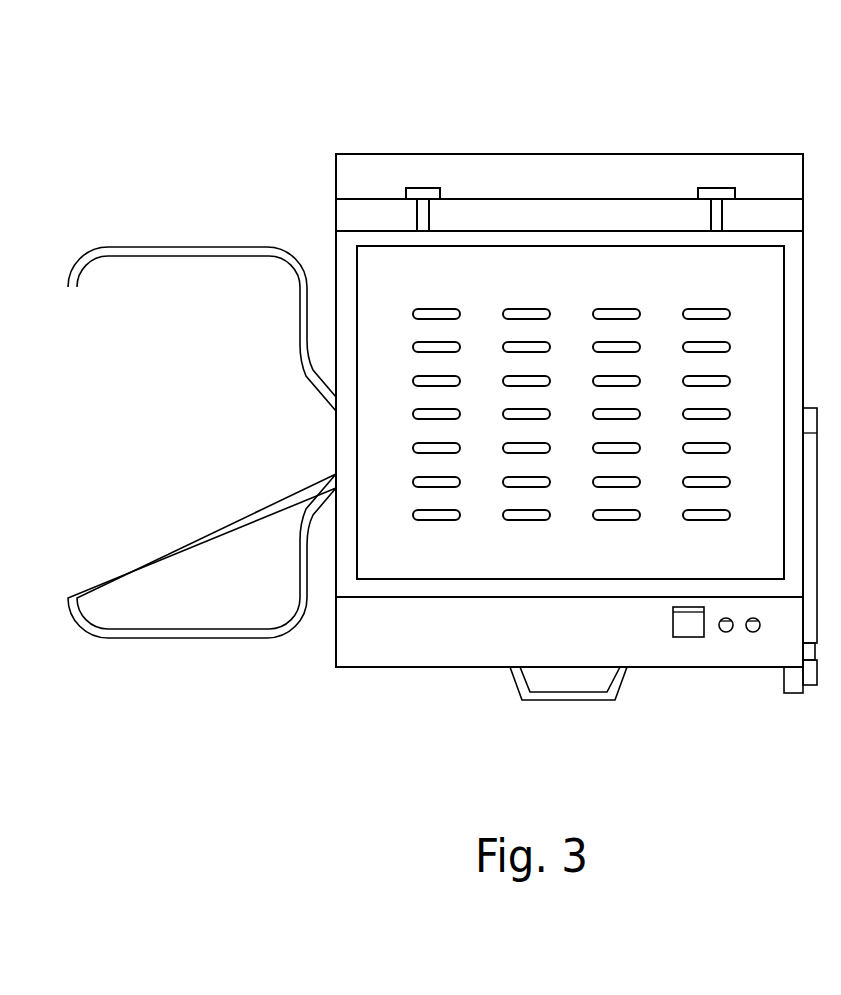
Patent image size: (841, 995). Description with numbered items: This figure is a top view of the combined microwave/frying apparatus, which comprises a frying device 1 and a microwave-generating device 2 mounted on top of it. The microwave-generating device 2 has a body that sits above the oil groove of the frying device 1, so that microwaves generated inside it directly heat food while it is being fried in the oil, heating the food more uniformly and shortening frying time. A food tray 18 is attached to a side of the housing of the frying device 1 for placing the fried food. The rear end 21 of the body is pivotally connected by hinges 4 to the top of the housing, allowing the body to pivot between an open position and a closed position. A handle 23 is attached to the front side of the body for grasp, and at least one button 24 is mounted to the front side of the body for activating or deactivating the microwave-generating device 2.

The frying device 1 is at (636, 130).
The microwave-generating device 2 is at (330, 268).
The hinges 4 is at (430, 210).
The food tray 18 is at (205, 252).
The rear end 21 is at (377, 212).
The handle 23 is at (587, 695).
The button 24 is at (726, 633).